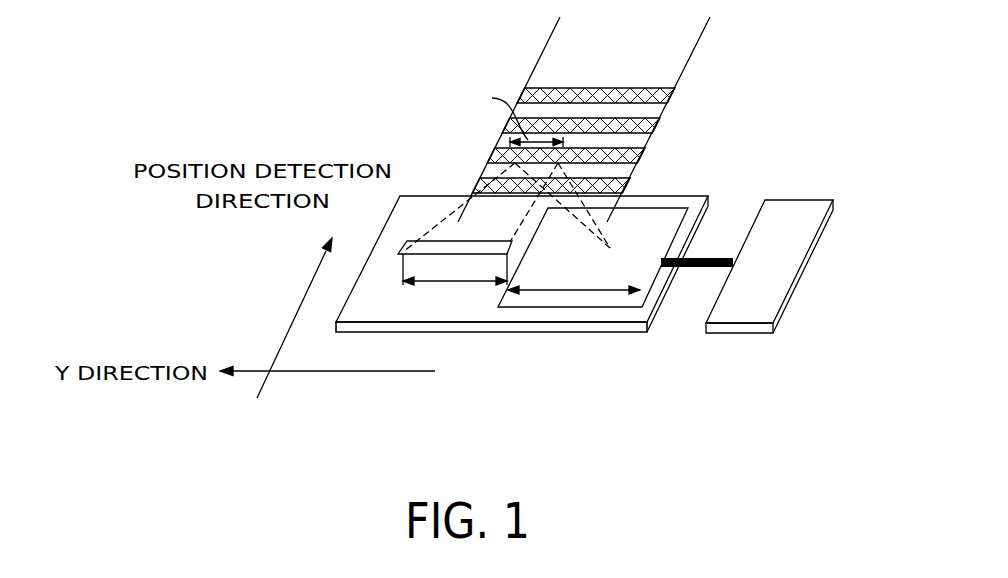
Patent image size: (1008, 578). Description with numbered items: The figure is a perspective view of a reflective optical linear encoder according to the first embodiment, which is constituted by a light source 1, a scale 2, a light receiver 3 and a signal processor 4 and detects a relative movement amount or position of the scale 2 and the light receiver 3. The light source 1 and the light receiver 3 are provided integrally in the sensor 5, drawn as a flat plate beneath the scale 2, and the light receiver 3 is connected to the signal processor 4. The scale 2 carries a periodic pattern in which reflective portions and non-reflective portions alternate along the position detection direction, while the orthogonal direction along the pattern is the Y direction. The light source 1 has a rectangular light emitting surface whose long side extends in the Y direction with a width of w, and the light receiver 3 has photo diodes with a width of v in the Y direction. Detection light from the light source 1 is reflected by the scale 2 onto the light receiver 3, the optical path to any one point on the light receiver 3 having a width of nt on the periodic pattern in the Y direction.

The light source 1 is at (425, 255).
The scale 2 is at (670, 45).
The light receiver 3 is at (635, 230).
The signal processor 4 is at (770, 223).
The sensor 5 is at (583, 327).